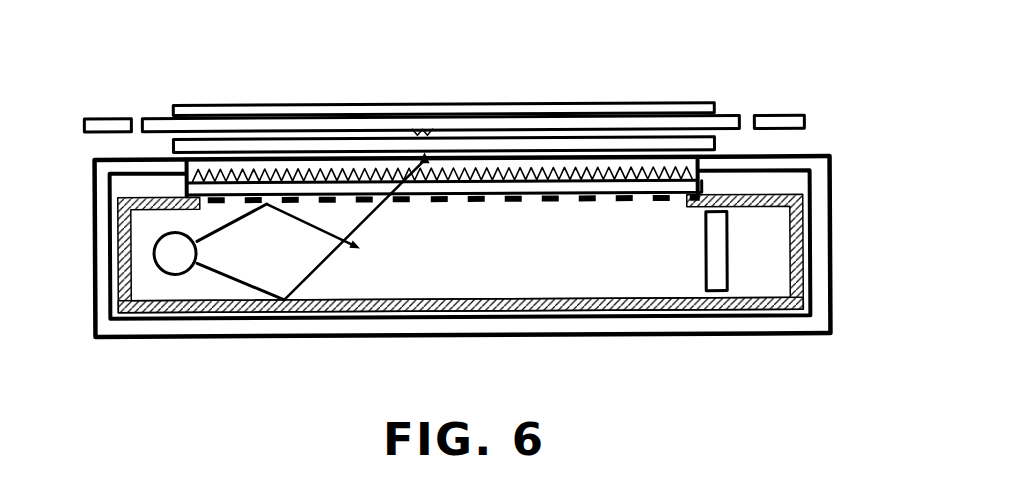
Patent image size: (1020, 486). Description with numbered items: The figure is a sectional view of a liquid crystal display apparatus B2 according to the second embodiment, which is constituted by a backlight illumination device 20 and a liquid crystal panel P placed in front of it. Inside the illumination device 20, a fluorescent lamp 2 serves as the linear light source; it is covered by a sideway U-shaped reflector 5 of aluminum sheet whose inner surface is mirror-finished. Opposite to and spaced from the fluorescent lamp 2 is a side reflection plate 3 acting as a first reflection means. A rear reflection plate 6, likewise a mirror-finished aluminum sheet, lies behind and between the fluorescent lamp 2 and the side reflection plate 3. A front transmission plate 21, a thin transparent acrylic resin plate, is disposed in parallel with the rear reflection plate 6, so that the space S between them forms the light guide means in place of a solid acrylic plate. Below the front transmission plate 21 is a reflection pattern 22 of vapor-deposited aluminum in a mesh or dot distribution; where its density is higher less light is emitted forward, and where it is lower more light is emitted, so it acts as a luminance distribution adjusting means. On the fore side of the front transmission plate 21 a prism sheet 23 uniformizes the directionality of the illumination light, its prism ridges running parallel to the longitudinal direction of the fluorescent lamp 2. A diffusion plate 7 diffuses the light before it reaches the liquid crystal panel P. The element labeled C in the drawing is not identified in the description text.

The fluorescent lamp 2 is at (167, 262).
The side reflection plate 3 is at (720, 252).
The reflector 5 is at (168, 312).
The rear reflection plate 6 is at (515, 312).
The diffusion plate 7 is at (672, 143).
The illumination device 20 is at (845, 256).
The front transmission plate 21 is at (645, 188).
The reflection pattern 22 is at (623, 200).
The prism sheet 23 is at (572, 165).
The liquid crystal panel P is at (520, 110).
The liquid crystal display apparatus B2 is at (790, 95).
The cover C is at (102, 230).
The space S is at (479, 267).